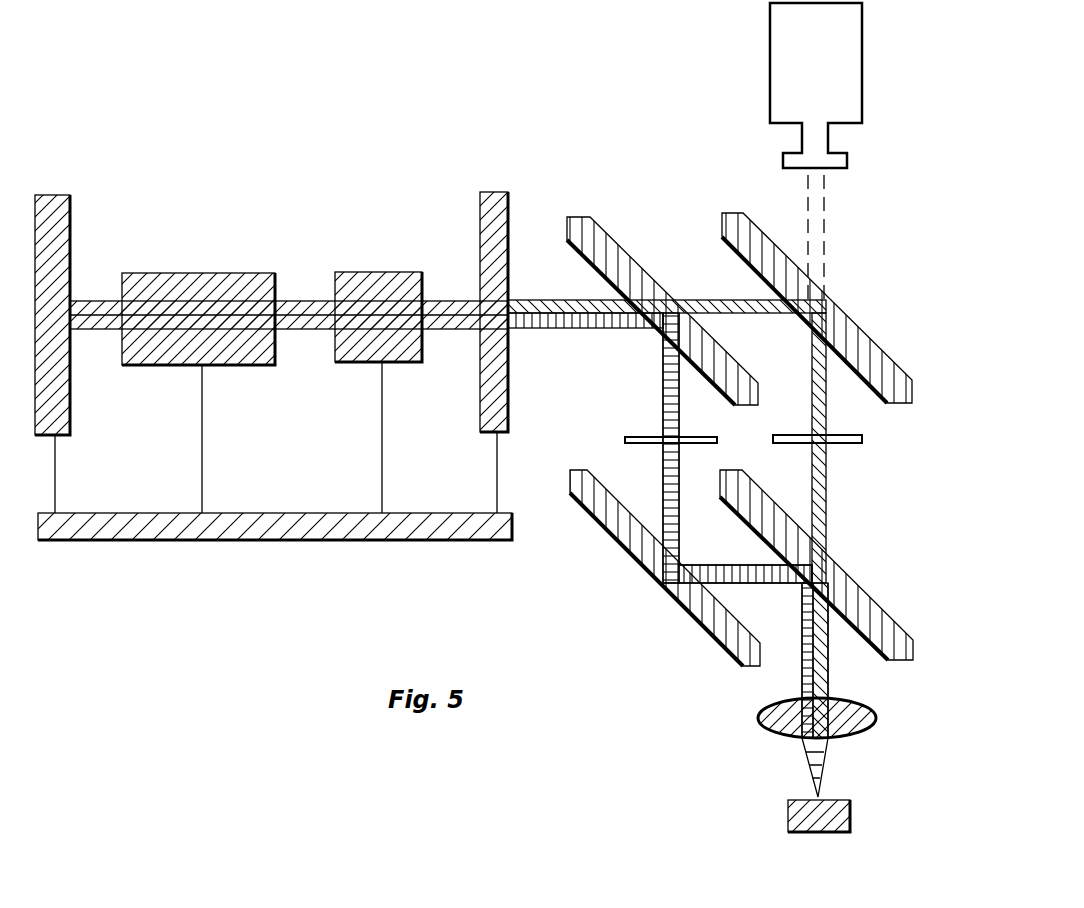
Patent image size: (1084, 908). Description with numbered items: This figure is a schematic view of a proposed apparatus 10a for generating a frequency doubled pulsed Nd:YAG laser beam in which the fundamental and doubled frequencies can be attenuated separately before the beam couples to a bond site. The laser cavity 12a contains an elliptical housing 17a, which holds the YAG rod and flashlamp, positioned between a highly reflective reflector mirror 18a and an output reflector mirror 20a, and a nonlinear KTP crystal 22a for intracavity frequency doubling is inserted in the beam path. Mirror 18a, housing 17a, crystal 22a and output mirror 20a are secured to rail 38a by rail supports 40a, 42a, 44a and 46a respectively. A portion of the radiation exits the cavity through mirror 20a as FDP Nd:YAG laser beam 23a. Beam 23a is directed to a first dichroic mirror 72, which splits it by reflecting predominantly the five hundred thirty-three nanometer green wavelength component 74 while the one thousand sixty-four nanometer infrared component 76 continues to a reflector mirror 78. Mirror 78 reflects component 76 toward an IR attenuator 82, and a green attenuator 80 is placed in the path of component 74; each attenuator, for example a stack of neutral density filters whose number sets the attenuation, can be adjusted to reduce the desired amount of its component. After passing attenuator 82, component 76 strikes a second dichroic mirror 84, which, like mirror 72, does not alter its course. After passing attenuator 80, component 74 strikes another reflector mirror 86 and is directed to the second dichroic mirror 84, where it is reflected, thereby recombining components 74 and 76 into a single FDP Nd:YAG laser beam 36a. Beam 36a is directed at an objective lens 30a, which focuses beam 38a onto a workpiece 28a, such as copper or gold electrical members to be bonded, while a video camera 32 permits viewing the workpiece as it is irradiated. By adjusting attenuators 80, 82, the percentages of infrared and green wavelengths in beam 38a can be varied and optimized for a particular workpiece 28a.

The apparatus 10a is at (118, 213).
The cavity 12a is at (299, 226).
The elliptical housing 17a is at (240, 273).
The reflector mirror 18a is at (78, 165).
The output reflector mirror 20a is at (520, 175).
The KTP crystal 22a is at (385, 272).
The FDP Nd:YAG laser beam 23a is at (585, 300).
The workpiece 28a is at (788, 815).
The objective lens 30a is at (758, 718).
The video camera 32 is at (770, 55).
The combined FDP Nd:YAG laser beam 36a is at (828, 660).
The focused laser beam 38a is at (330, 540).
The rail support 40a is at (55, 468).
The rail support 42a is at (202, 468).
The rail support 44a is at (382, 466).
The rail support 46a is at (528, 490).
The first dichroic mirror 72 is at (600, 195).
The 533 nm wavelength component 74 is at (663, 372).
The 1064 nm wavelength component 76 is at (708, 300).
The reflector mirror 78 is at (760, 192).
The green attenuator 80 is at (625, 440).
The IR attenuator 82 is at (862, 439).
The second dichroic mirror 84 is at (895, 622).
The reflector mirror 86 is at (620, 548).